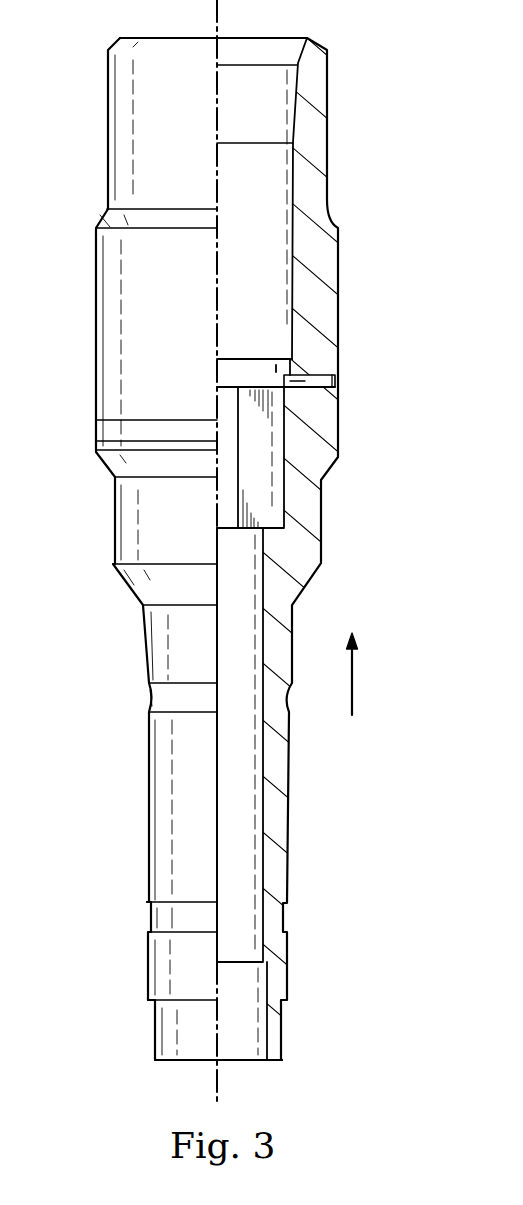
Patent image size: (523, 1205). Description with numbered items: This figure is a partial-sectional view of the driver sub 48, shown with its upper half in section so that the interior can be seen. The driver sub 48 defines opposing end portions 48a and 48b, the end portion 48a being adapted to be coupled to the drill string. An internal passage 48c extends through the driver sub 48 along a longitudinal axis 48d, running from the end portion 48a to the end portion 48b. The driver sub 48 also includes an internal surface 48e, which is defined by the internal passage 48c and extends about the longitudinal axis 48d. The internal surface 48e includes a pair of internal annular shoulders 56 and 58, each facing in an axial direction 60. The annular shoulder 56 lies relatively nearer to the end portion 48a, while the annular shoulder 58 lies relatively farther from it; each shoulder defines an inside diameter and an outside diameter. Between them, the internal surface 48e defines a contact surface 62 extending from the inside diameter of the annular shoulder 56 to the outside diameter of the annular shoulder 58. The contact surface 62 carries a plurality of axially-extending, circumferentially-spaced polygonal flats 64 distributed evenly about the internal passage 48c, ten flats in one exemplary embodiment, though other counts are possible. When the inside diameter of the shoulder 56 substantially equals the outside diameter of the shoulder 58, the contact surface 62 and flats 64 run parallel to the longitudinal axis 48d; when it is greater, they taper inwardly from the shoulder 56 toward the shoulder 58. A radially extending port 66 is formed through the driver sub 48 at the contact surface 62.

The driver sub 48 is at (327, 90).
The end portion 48a is at (108, 90).
The end portion 48b is at (147, 980).
The internal passage 48c is at (270, 118).
The longitudinal axis 48d is at (217, 1083).
The internal surface 48e is at (292, 207).
The internal annular shoulder 56 is at (288, 358).
The internal annular shoulder 58 is at (276, 524).
The axial direction 60 is at (353, 692).
The contact surface 62 is at (282, 463).
The polygonal flats 64 is at (220, 407).
The radially extending port 66 is at (315, 377).